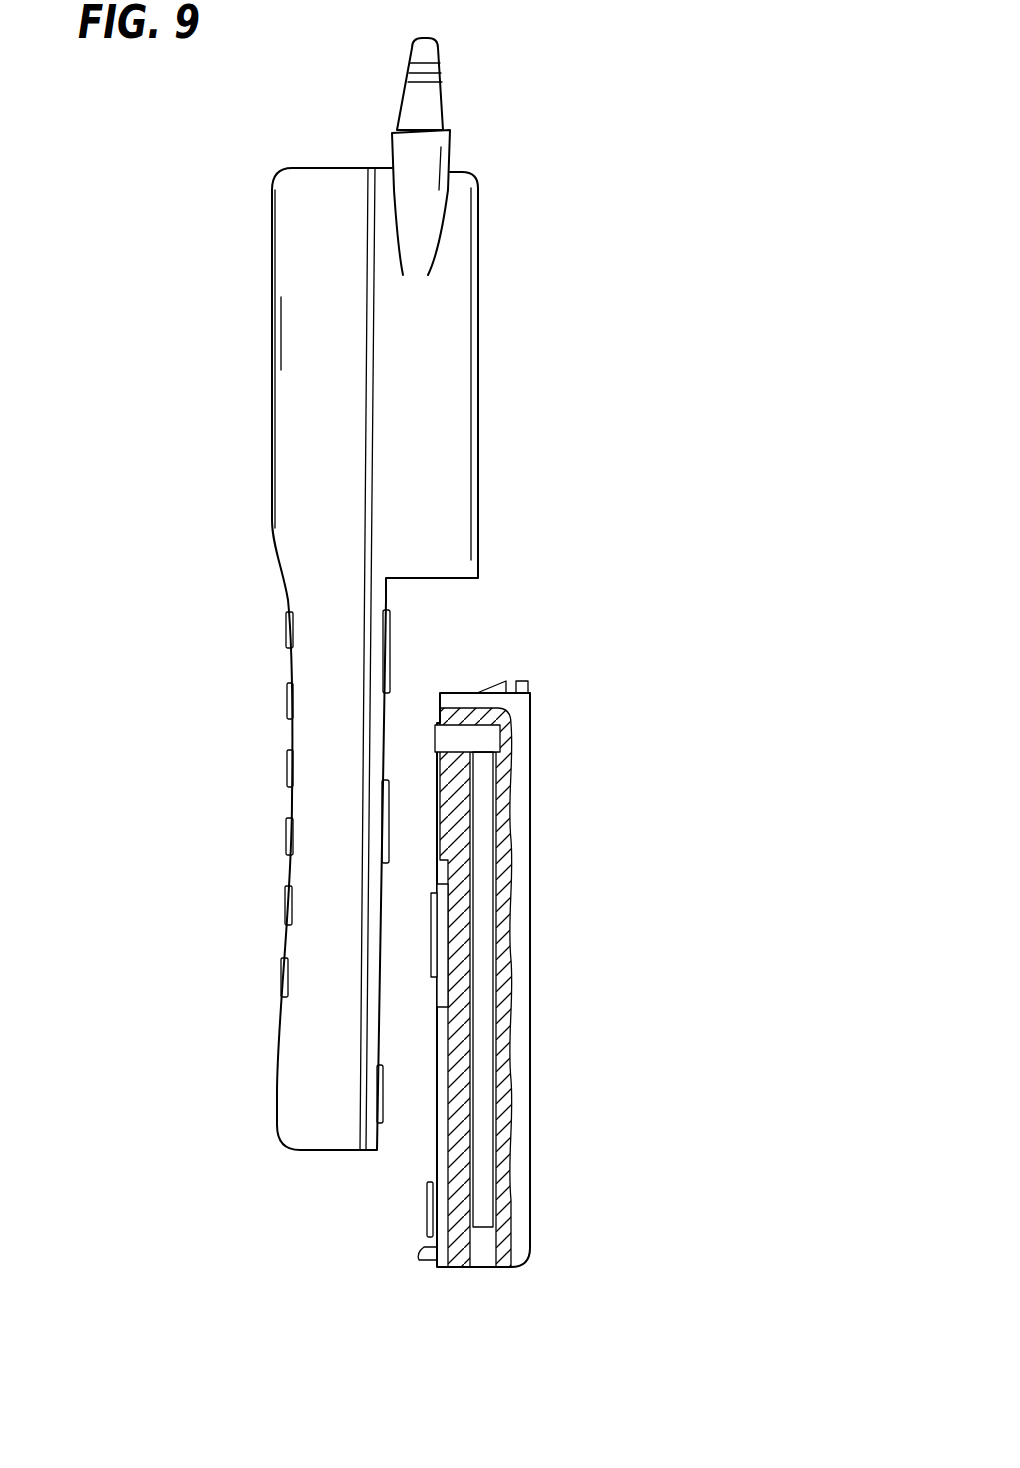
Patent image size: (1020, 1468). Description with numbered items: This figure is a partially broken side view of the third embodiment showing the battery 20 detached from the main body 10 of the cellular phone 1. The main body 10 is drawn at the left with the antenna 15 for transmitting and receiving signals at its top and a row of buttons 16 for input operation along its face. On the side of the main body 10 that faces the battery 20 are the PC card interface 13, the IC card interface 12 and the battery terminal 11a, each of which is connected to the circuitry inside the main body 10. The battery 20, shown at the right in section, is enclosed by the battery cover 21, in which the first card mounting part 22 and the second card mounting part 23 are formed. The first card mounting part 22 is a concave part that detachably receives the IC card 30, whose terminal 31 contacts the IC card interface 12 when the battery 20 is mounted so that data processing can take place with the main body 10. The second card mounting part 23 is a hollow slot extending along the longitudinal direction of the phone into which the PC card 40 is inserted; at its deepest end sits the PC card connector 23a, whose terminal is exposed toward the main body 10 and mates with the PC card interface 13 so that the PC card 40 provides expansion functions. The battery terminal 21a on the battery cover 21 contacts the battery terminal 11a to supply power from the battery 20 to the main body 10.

The cellular phone 1 is at (662, 510).
The main body 10 is at (493, 537).
The antenna 15 is at (433, 117).
The buttons 16 is at (283, 632).
The PC card interface 13 is at (392, 636).
The IC card interface 12 is at (385, 834).
The battery terminal 11a is at (380, 1100).
The battery 20 is at (495, 972).
The battery cover 21 is at (531, 1078).
The first card mounting part 22 is at (447, 841).
The PC card connector 23a is at (482, 740).
The PC card 40 is at (478, 1135).
The IC card 30 is at (442, 933).
The terminal 31 is at (433, 960).
The battery terminal 21a is at (427, 1195).
The second card mounting part 23 is at (494, 1245).